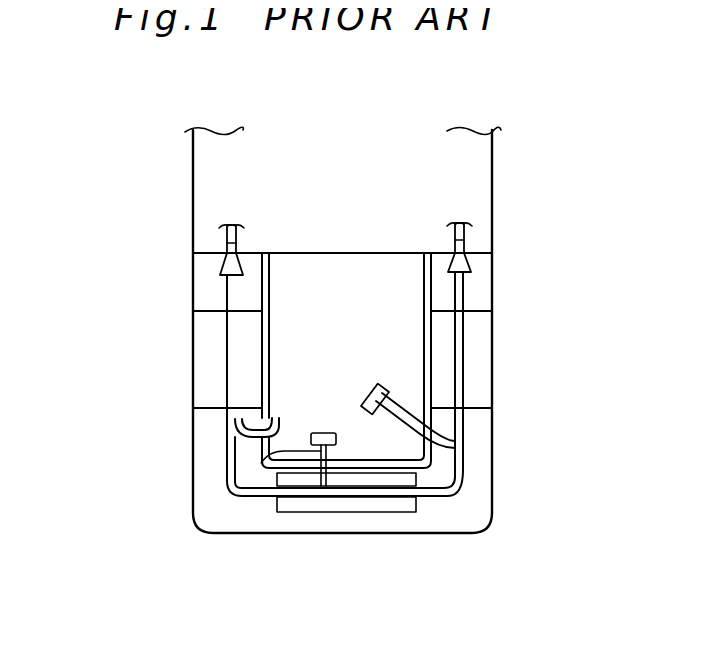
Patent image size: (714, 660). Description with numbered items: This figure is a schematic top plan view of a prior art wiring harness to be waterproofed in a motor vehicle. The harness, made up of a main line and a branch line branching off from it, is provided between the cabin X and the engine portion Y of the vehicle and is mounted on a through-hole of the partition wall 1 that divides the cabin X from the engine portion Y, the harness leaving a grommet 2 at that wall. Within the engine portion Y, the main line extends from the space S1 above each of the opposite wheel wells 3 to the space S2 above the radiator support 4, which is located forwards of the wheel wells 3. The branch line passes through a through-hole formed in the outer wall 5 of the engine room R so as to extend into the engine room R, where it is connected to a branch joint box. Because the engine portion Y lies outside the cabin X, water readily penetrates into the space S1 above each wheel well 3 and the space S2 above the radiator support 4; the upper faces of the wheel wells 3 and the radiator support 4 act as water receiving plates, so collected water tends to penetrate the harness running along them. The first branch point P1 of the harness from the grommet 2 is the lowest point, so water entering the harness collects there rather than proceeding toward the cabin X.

The cabin X is at (161, 190).
The engine portion Y is at (157, 388).
The engine room R is at (312, 278).
The partition wall 1 is at (368, 250).
The grommet 2 is at (472, 264).
The wheel well 3 is at (210, 332).
The space above wheel well S1 is at (212, 362).
The outer wall of engine room 5 is at (263, 383).
The first branch point P1 is at (465, 437).
The space above radiator support S2 is at (300, 485).
The radiator support 4 is at (326, 507).